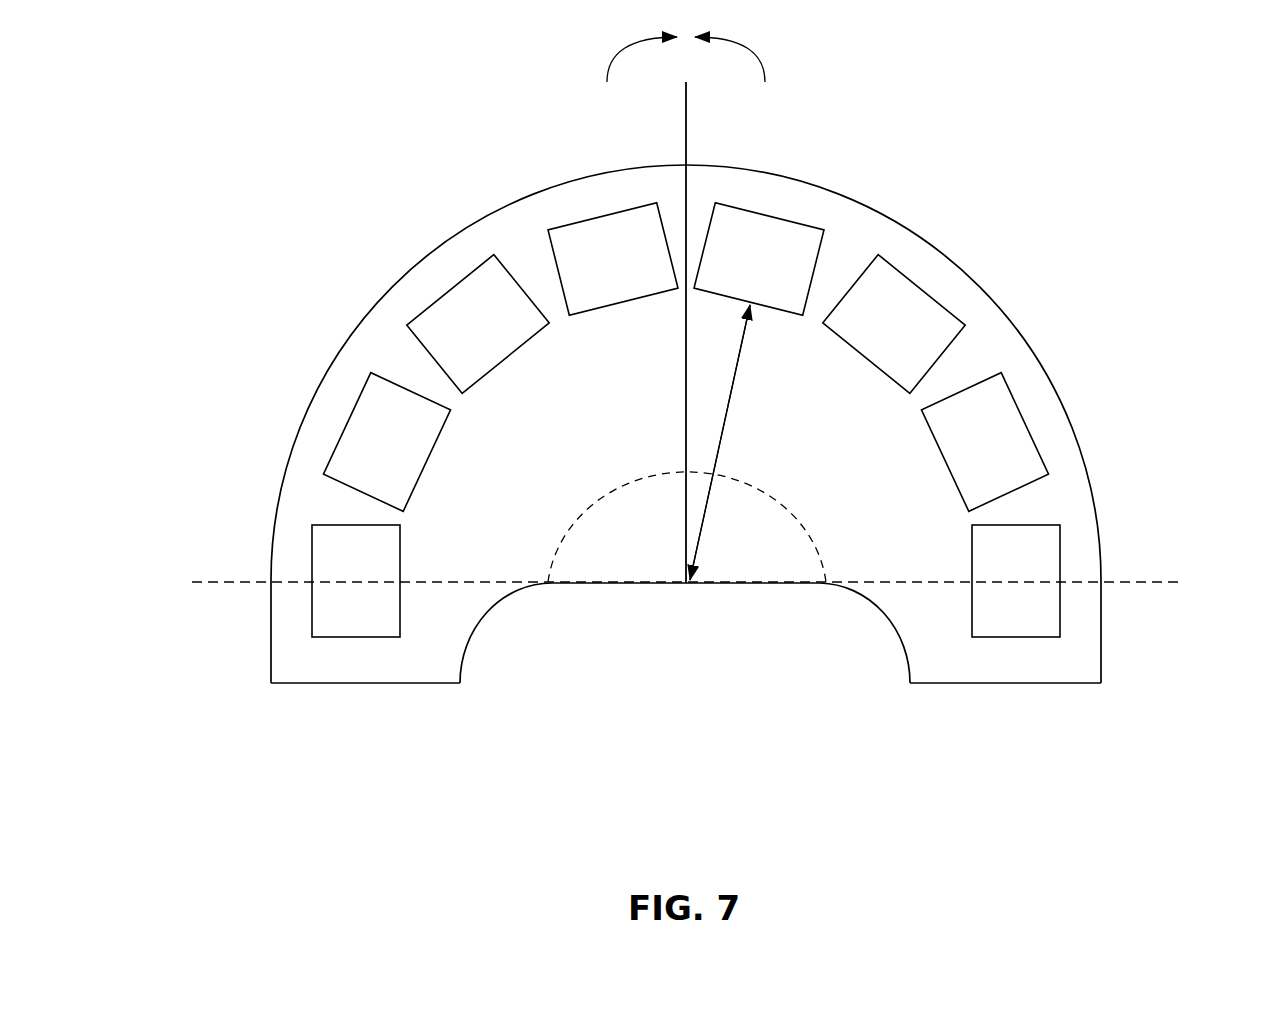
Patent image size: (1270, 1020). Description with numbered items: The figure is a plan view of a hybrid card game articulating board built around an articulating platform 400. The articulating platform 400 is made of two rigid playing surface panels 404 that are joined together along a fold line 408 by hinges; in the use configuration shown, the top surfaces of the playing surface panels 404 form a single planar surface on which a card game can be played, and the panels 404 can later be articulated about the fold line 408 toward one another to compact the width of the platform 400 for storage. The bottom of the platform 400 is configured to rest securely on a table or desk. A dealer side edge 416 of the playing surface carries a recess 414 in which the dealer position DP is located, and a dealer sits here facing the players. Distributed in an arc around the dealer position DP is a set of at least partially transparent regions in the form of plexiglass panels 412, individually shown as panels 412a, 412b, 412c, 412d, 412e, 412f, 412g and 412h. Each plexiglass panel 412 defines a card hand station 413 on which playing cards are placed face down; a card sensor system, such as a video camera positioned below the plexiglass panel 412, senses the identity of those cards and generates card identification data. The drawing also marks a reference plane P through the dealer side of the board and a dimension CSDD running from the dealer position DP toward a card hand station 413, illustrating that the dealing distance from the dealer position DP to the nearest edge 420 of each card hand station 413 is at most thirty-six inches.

The articulating platform 400 is at (337, 130).
The playing surface panels 404 is at (435, 253).
The fold line 408 is at (683, 156).
The plexiglass panels 412 is at (702, 371).
The plexiglass panel 412a is at (312, 577).
The plexiglass panel 412b is at (353, 413).
The plexiglass panel 412c is at (430, 303).
The plexiglass panel 412d is at (567, 232).
The plexiglass panel 412e is at (765, 213).
The plexiglass panel 412f is at (923, 290).
The plexiglass panel 412g is at (1017, 403).
The plexiglass panel 412h is at (1062, 550).
The card hand stations 413 is at (318, 613).
The recess 414 is at (767, 658).
The dealer side edge 416 is at (357, 687).
The nearest edge 420 is at (403, 603).
The plane P is at (1140, 583).
The dealer position DP is at (682, 593).
The center-to-surface distance CSDD is at (722, 442).